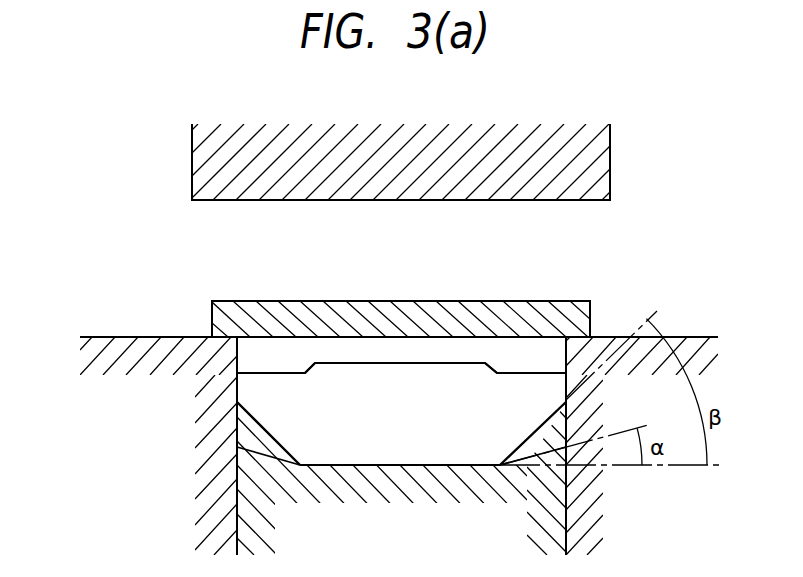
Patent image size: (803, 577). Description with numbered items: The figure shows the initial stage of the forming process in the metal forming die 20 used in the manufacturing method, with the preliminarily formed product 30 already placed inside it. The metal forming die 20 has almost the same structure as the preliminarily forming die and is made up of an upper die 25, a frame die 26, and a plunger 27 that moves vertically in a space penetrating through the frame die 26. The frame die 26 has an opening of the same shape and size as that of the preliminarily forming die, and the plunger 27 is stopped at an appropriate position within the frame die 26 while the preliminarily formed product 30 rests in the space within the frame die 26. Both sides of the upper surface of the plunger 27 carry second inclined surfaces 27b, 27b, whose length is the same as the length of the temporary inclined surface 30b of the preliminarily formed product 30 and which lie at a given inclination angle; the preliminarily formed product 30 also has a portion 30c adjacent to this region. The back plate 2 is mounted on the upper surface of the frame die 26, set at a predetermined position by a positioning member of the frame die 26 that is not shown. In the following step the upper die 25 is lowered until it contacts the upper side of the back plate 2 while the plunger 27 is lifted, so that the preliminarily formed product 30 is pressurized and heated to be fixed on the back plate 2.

The metal forming die 20 is at (104, 180).
The upper die 25 is at (610, 161).
The frame die 26 is at (135, 337).
The back plate 2 is at (592, 320).
The plunger 27 is at (416, 550).
The second inclined surface 27b is at (272, 452).
The preliminarily formed product 30 is at (414, 407).
The temporary inclined surface 30b is at (272, 445).
The step portion of recess 30c is at (288, 367).